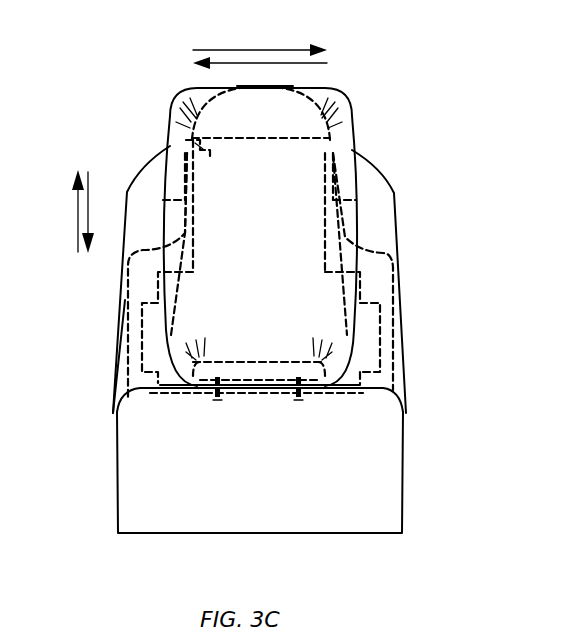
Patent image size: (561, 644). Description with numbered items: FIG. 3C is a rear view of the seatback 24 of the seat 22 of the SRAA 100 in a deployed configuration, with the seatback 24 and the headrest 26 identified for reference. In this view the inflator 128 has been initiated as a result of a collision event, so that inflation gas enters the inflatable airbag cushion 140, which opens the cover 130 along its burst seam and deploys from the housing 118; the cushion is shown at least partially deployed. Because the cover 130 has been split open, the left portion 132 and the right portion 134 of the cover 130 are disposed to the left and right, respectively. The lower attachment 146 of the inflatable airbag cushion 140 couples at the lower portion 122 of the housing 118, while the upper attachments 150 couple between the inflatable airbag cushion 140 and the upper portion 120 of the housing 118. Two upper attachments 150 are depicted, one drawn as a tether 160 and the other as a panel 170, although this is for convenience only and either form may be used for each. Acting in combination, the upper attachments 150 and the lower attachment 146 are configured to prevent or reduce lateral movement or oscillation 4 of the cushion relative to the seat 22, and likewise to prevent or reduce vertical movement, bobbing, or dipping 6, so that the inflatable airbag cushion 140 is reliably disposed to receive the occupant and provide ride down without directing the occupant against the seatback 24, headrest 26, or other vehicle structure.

The lateral movement or oscillation 4 is at (255, 50).
The vertical movement, bobbing, or dipping 6 is at (77, 208).
The seat 22 is at (85, 135).
The seatback 24 is at (178, 450).
The headrest 26 is at (268, 86).
The SRAA 100 is at (148, 93).
The housing 118 is at (363, 285).
The upper portion of the housing 120 is at (340, 172).
The lower portion of the housing 122 is at (362, 382).
The inflator 128 is at (272, 392).
The cover 130 is at (140, 208).
The left portion of the cover 132 is at (110, 400).
The right portion of the cover 134 is at (398, 325).
The inflatable airbag cushion 140 is at (277, 291).
The lower attachment 146 is at (263, 388).
The upper attachment 150 is at (170, 145).
The tether 160 is at (207, 152).
The panel 170 is at (357, 183).